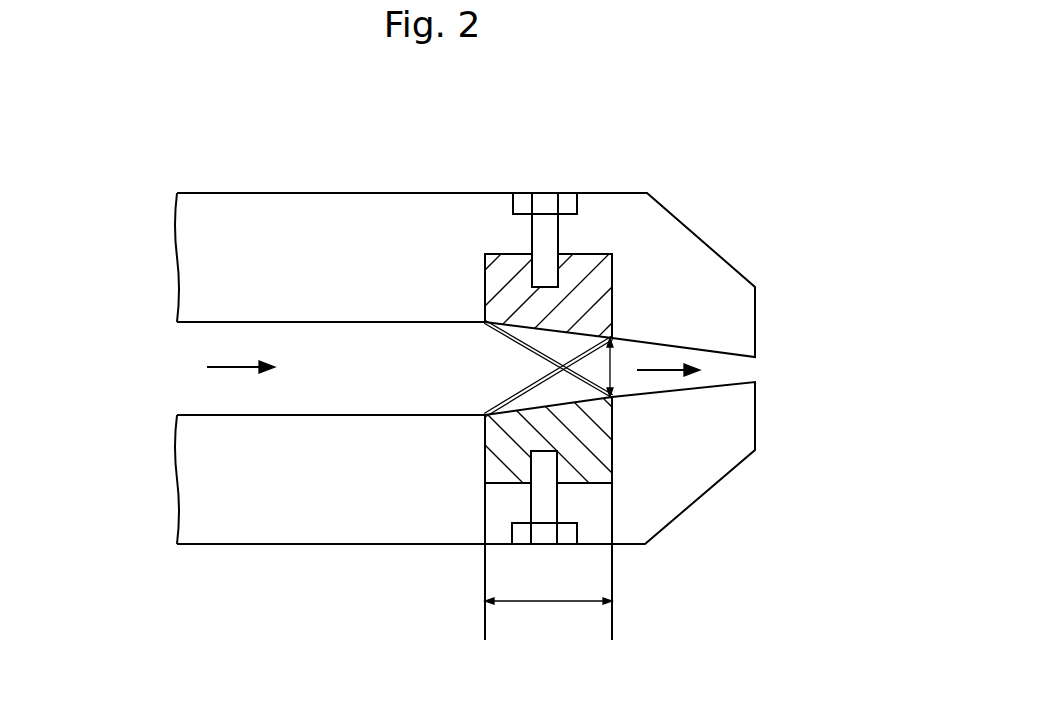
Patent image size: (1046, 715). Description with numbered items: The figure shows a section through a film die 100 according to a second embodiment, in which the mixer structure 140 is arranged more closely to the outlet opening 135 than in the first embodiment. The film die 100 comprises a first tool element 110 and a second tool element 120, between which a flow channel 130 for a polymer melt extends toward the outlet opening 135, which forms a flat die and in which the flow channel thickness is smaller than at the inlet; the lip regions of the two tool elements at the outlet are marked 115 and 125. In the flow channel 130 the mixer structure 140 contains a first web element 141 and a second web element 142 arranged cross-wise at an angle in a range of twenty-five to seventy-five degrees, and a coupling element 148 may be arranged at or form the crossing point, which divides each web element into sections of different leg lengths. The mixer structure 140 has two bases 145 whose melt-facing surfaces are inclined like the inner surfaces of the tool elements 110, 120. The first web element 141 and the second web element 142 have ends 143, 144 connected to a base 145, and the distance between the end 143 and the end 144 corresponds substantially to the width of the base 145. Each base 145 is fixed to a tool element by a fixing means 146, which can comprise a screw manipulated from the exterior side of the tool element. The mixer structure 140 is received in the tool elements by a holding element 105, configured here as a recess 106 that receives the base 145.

The film die 100 is at (442, 327).
The holding element 105 is at (604, 489).
The recess 106 is at (568, 403).
The first tool element 110 is at (207, 283).
The upper nozzle lip 115 is at (756, 327).
The second tool element 120 is at (200, 465).
The lower nozzle lip 125 is at (756, 403).
The flow channel 130 is at (345, 348).
The outlet opening 135 is at (756, 368).
The mixer structure 140 is at (629, 238).
The first web element 141 is at (513, 343).
The second web element 142 is at (612, 397).
The end of the first web element 143 is at (503, 323).
The end of the second web element 144 is at (611, 338).
The base 145 is at (592, 283).
The fixing means 146 is at (542, 252).
The coupling element 148 is at (525, 412).